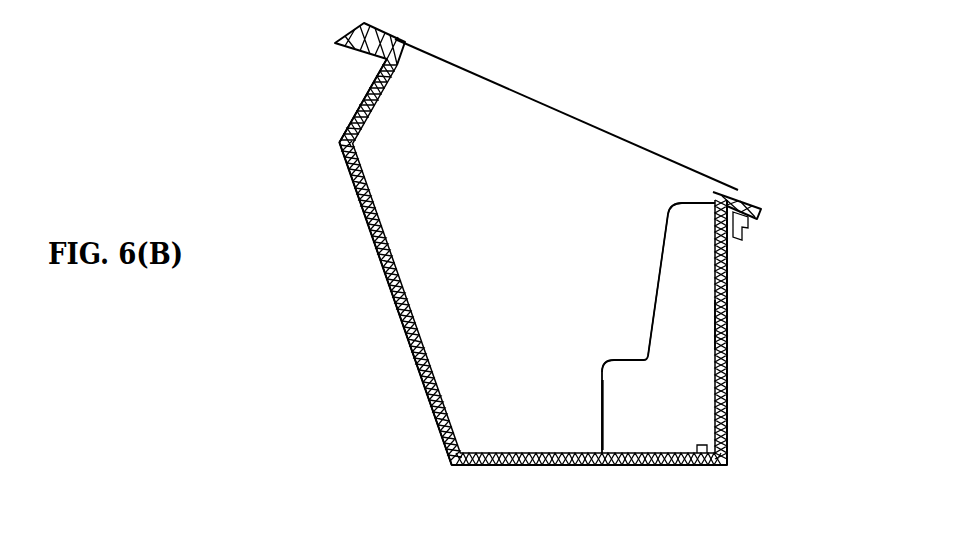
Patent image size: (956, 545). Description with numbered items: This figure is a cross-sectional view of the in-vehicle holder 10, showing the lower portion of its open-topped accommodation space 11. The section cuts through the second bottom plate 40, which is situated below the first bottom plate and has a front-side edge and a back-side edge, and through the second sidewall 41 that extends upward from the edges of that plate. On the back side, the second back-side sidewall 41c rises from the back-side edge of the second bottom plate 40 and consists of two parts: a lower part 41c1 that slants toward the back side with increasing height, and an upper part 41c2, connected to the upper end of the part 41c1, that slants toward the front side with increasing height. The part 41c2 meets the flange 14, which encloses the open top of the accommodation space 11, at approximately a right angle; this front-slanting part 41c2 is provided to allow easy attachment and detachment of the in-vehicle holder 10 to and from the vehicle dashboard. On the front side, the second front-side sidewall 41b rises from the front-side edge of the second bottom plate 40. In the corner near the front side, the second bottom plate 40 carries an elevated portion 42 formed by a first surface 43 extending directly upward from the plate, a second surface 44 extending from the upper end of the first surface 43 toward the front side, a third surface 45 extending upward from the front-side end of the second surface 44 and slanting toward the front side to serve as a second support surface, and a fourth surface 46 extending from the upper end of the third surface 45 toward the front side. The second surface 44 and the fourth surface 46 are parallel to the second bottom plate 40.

The in-vehicle holder 10 is at (781, 34).
The accommodation space 11 is at (577, 188).
The flange 14 is at (735, 200).
The second bottom plate 40 is at (527, 452).
The second sidewall 41 is at (713, 325).
The second front-side sidewall 41b is at (721, 325).
The second back-side sidewall 41c is at (395, 262).
The part slanting toward the back side 41c1 is at (388, 251).
The part slanting toward the front side 41c2 is at (375, 108).
The elevated portion 42 is at (640, 262).
The first surface 43 is at (600, 413).
The second surface 44 is at (624, 358).
The third surface 45 is at (664, 232).
The fourth surface 46 is at (697, 202).